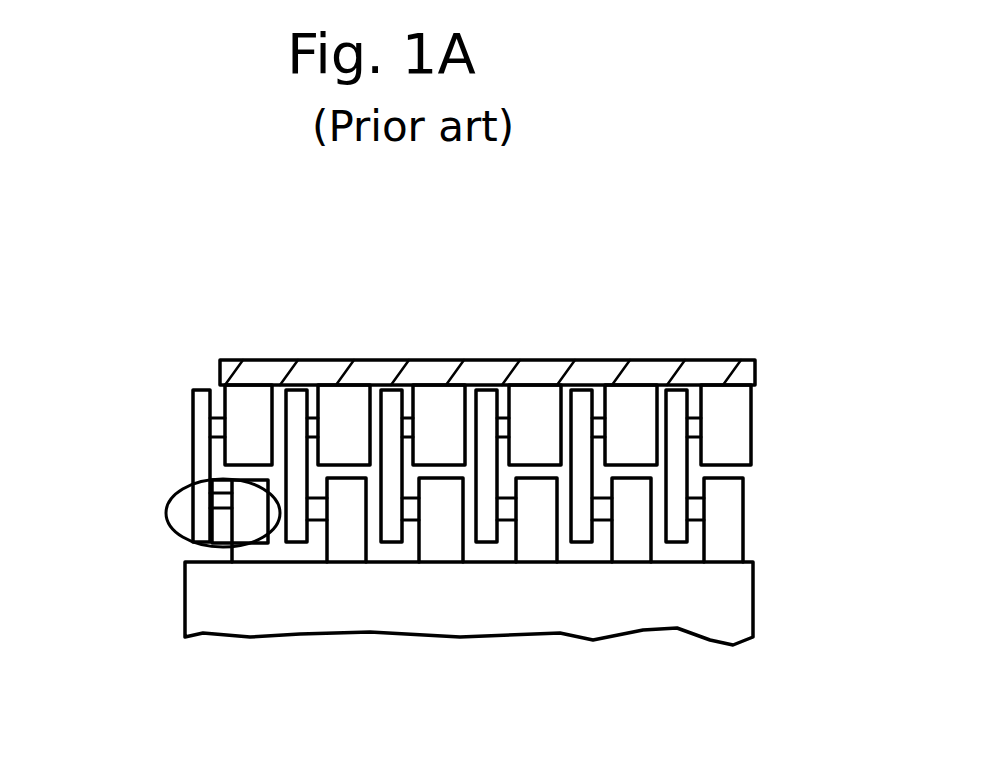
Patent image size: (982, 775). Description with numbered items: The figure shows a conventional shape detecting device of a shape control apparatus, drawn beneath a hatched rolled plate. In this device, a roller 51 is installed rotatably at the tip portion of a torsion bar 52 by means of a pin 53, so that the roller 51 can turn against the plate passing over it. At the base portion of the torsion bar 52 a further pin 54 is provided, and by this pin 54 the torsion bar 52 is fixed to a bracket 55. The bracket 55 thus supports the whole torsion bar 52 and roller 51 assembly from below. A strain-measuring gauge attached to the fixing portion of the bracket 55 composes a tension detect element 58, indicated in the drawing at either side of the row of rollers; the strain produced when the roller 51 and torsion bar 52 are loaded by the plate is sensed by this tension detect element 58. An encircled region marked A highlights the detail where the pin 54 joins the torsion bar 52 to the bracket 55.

The roller 51 is at (248, 405).
The torsion bar 52 is at (193, 452).
The pin 53 is at (197, 410).
The pin 54 is at (185, 532).
The bracket 55 is at (252, 557).
The tension detect element 58 is at (202, 375).
The enlarged region A is at (167, 515).